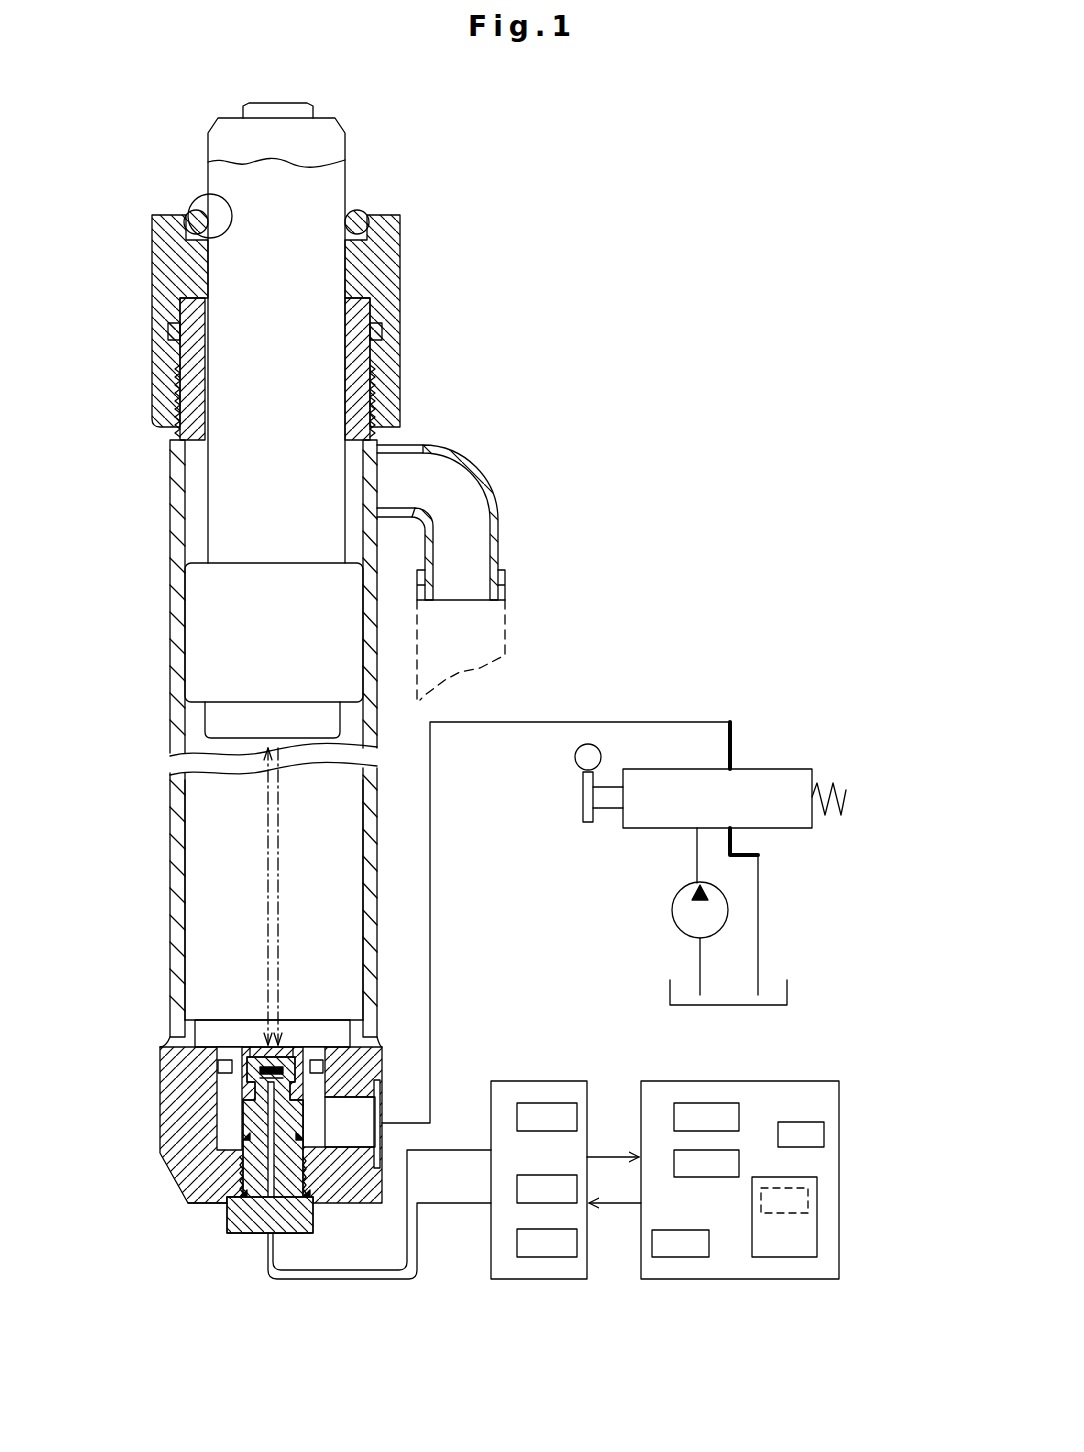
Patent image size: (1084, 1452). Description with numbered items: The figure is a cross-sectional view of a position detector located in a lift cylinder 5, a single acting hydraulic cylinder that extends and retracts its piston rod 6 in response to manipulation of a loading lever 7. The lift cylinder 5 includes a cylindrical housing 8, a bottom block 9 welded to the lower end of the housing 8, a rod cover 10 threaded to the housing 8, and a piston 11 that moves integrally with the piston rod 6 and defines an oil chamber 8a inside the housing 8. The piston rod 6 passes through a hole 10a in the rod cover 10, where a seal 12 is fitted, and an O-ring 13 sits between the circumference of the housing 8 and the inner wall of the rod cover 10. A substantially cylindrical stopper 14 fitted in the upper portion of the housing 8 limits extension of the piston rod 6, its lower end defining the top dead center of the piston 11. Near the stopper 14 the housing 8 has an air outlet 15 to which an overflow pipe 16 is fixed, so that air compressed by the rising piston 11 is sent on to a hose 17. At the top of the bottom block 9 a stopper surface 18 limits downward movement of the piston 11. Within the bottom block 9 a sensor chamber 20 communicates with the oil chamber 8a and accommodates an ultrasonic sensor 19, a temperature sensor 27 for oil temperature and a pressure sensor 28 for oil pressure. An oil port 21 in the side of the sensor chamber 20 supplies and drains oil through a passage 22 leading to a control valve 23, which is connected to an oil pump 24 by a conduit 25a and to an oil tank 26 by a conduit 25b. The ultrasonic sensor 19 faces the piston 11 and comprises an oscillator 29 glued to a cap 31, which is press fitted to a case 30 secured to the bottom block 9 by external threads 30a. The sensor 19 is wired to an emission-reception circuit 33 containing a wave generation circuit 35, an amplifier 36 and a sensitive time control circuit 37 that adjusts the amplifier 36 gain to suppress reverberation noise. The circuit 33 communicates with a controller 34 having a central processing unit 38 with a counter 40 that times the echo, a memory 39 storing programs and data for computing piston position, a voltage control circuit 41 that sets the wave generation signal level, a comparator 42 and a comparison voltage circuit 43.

The lift cylinder 5 is at (128, 496).
The piston rod 6 is at (331, 141).
The loading lever 7 is at (583, 791).
The cylindrical housing 8 is at (177, 612).
The oil chamber 8a is at (182, 879).
The bottom block 9 is at (160, 1097).
The rod cover 10 is at (390, 289).
The hole 10a is at (228, 195).
The piston 11 is at (196, 680).
The seal 12 is at (361, 205).
The O-ring 13 is at (383, 330).
The stopper 14 is at (178, 395).
The air outlet 15 is at (393, 453).
The overflow pipe 16 is at (492, 481).
The hose 17 is at (505, 620).
The stopper surface 18 is at (205, 1040).
The ultrasonic sensor 19 is at (249, 1046).
The sensor chamber 20 is at (320, 1048).
The oil port 21 is at (353, 1143).
The passage 22 is at (610, 722).
The control valve 23 is at (794, 769).
The oil pump 24 is at (672, 905).
The conduit 25a is at (697, 852).
The conduit 25b is at (759, 881).
The oil tank 26 is at (788, 990).
The temperature sensor 27 is at (235, 1063).
The pressure sensor 28 is at (327, 1068).
The oscillator 29 is at (290, 1047).
The case 30 is at (232, 1222).
The external threads 30a is at (240, 1172).
The cap 31 is at (250, 1116).
The emission-reception circuit 33 is at (556, 1081).
The controller 34 is at (790, 1081).
The wave generation circuit 35 is at (517, 1243).
The amplifier 36 is at (530, 1103).
The sensitive time control circuit 37 is at (546, 1175).
The central processing unit 38 is at (817, 1243).
The memory 39 is at (824, 1135).
The counter 40 is at (808, 1196).
The voltage control circuit 41 is at (700, 1180).
The comparator 42 is at (703, 1103).
The comparison voltage circuit 43 is at (700, 1200).